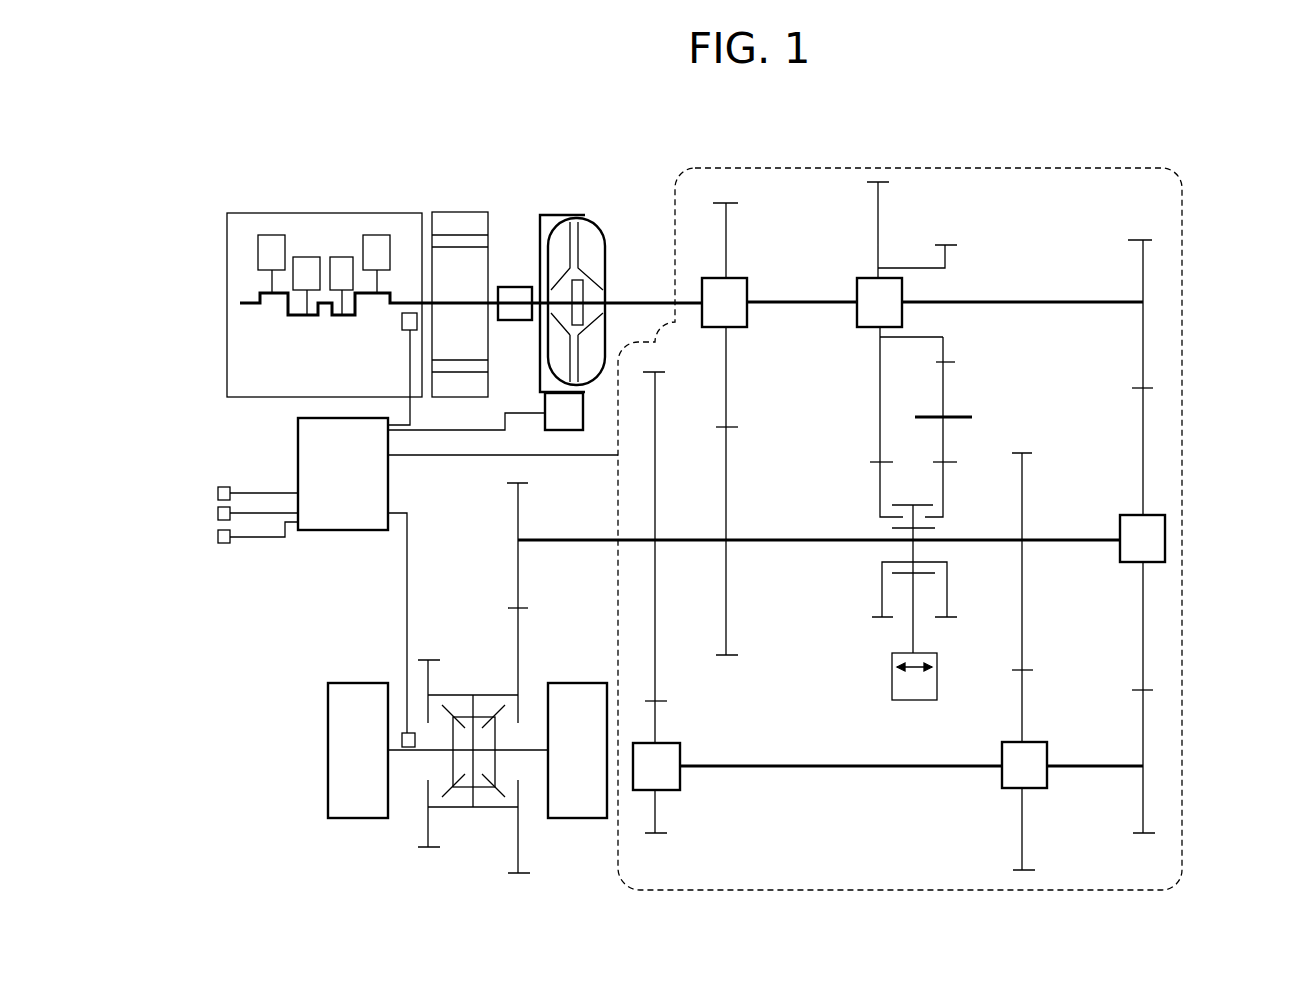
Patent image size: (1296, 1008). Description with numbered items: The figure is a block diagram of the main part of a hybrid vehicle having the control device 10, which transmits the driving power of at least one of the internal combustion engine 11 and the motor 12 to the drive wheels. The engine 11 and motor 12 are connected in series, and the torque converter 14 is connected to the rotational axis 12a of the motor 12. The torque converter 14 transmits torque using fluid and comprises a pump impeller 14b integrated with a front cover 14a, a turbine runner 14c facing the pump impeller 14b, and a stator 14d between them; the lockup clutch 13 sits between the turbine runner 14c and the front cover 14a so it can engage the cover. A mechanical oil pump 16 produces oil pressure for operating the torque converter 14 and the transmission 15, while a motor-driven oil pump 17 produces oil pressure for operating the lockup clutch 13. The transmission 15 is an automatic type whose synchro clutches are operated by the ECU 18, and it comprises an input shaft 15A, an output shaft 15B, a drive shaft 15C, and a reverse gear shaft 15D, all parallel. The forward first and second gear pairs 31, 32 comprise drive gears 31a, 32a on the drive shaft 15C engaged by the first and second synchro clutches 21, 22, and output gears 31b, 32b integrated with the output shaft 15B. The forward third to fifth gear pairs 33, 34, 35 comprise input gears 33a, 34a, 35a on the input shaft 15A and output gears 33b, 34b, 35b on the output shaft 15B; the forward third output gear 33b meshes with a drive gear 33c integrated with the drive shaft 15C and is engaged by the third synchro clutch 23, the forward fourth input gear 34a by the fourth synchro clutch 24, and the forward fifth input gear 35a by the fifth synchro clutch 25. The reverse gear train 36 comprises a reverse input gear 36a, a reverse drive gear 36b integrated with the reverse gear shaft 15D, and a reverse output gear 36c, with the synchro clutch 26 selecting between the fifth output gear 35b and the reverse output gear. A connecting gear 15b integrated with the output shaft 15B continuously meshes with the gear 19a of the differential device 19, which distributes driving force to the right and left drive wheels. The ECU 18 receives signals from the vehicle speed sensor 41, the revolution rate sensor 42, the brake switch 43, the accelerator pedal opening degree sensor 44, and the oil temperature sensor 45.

The control device for a hybrid vehicle 10 is at (1138, 149).
The internal combustion engine 11 is at (258, 213).
The motor 12 is at (438, 212).
The rotational axis of the motor 12a is at (490, 298).
The lockup clutch 13 is at (546, 240).
The torque converter 14 is at (598, 253).
The front cover 14a is at (570, 226).
The pump impeller 14b is at (596, 243).
The turbine runner 14c is at (598, 222).
The stator 14d is at (583, 288).
The transmission 15 is at (765, 169).
The input shaft 15A is at (1020, 300).
The output shaft 15B is at (570, 545).
The drive shaft 15C is at (845, 768).
The reverse gear shaft 15D is at (920, 417).
The connecting gear 15b is at (518, 565).
The mechanical oil pump 16 is at (515, 287).
The motor-driven oil pump 17 is at (545, 410).
The ECU 18 is at (298, 428).
The differential device 19 is at (452, 695).
The gear of the differential device 19a is at (517, 630).
The first synchro clutch 21 is at (680, 788).
The second synchro clutch 22 is at (1010, 788).
The third synchro clutch 23 is at (1165, 528).
The fourth synchro clutch 24 is at (744, 278).
The fifth synchro clutch 25 is at (870, 278).
The synchro clutch 26 is at (915, 700).
The forward first gear pair 31 is at (744, 668).
The forward first drive gear 31a is at (656, 718).
The forward first output gear 31b is at (656, 688).
The forward second gear pair 32 is at (1090, 628).
The forward second drive gear 32a is at (1023, 715).
The forward second output gear 32b is at (1023, 660).
The forward third gear pair 33 is at (1245, 350).
The forward third input gear 33a is at (1143, 368).
The forward third output gear 33b is at (1143, 410).
The drive gear 33c is at (1143, 742).
The forward fourth gear pair 34 is at (800, 362).
The forward fourth input gear 34a is at (727, 396).
The forward fourth output gear 34b is at (727, 434).
The forward fifth gear pair 35 is at (812, 428).
The forward fifth input gear 35a is at (882, 442).
The forward fifth output gear 35b is at (882, 483).
The reverse gear train 36 is at (1036, 330).
The reverse input gear 36a is at (945, 355).
The reverse drive gear 36b is at (945, 388).
The reverse output gear 36c is at (945, 482).
The vehicle speed sensor 41 is at (408, 733).
The revolution rate sensor 42 is at (402, 330).
The brake switch 43 is at (224, 487).
The accelerator pedal opening degree sensor 44 is at (218, 513).
The oil temperature sensor 45 is at (224, 543).